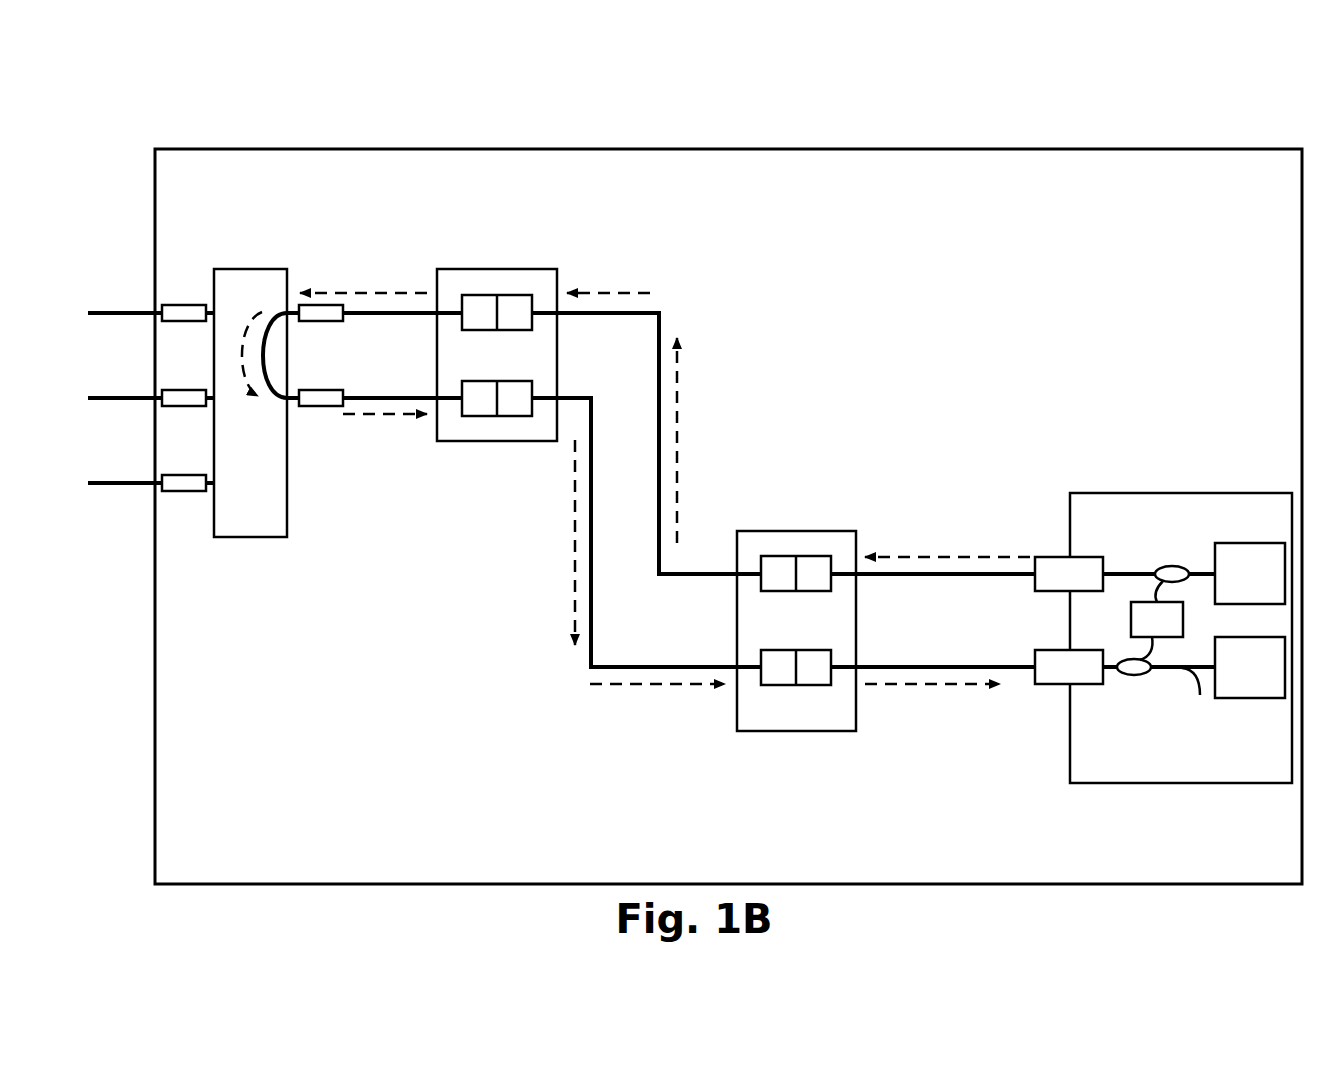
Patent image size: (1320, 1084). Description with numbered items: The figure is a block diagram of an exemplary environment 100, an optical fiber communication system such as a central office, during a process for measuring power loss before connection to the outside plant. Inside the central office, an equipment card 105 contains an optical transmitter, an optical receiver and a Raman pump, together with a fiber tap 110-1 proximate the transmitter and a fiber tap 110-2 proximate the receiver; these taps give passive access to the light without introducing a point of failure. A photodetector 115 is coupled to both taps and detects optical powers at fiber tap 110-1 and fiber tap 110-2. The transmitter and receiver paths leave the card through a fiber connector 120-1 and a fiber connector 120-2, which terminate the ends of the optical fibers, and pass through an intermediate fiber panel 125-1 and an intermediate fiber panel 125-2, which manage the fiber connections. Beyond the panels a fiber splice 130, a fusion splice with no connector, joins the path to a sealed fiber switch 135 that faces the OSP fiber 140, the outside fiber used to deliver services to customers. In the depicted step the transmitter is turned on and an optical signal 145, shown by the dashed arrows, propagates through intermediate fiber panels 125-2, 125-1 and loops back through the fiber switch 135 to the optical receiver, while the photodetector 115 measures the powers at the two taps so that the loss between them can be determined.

The exemplary environment 100 is at (262, 137).
The OSP fiber 140 is at (112, 560).
The fiber switch 135 is at (245, 537).
The fiber splice 130 is at (326, 414).
The intermediate fiber panel 125-2 is at (509, 269).
The intermediate fiber panel 125-1 is at (793, 731).
The optical signal 145 is at (472, 748).
The equipment card 105 is at (1188, 493).
The fiber connector 120-1 is at (1032, 555).
The fiber connector 120-2 is at (1028, 688).
The fiber tap 110-1 is at (1172, 566).
The fiber tap 110-2 is at (1134, 676).
The photodetector 115 is at (1131, 615).